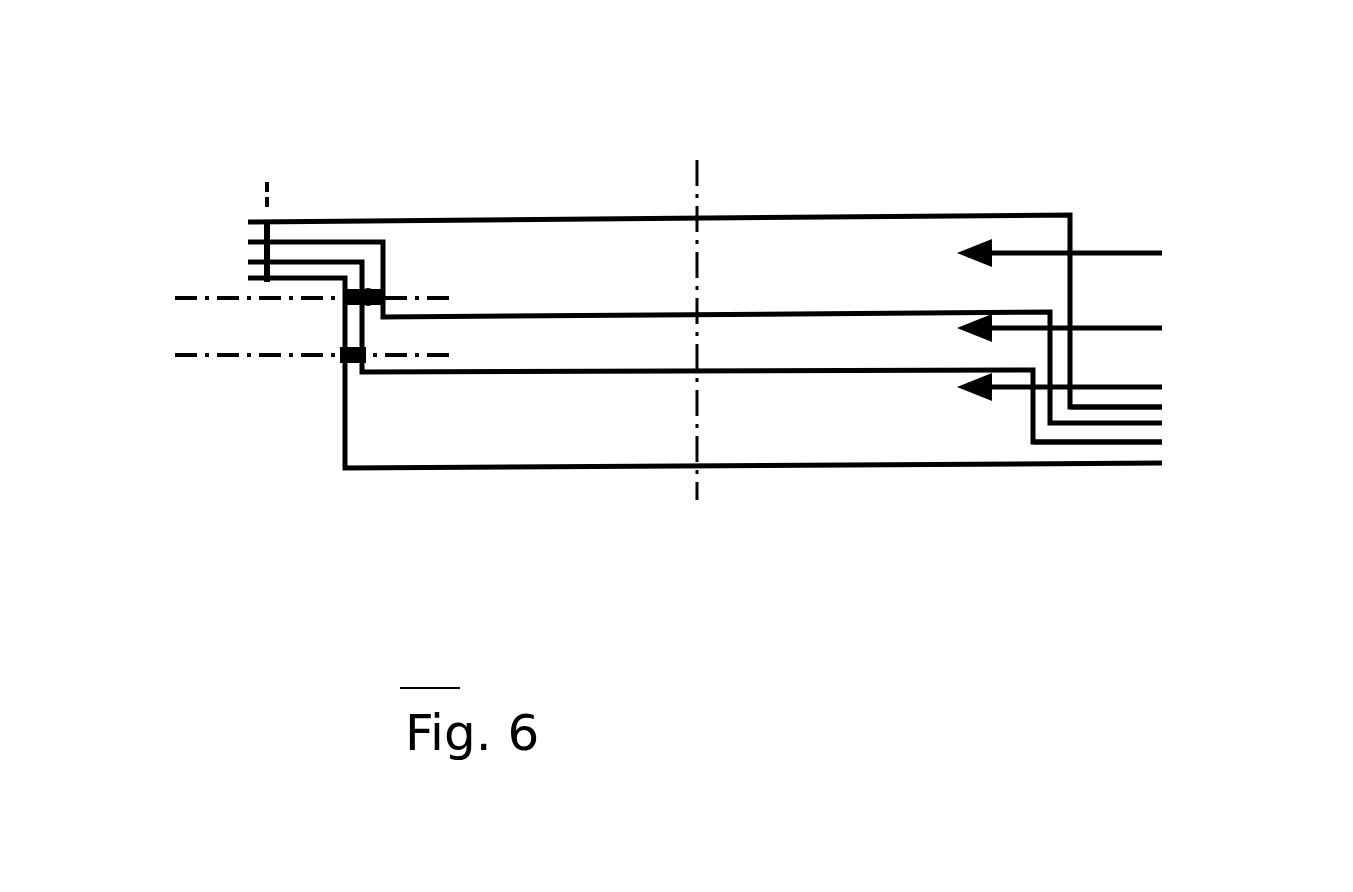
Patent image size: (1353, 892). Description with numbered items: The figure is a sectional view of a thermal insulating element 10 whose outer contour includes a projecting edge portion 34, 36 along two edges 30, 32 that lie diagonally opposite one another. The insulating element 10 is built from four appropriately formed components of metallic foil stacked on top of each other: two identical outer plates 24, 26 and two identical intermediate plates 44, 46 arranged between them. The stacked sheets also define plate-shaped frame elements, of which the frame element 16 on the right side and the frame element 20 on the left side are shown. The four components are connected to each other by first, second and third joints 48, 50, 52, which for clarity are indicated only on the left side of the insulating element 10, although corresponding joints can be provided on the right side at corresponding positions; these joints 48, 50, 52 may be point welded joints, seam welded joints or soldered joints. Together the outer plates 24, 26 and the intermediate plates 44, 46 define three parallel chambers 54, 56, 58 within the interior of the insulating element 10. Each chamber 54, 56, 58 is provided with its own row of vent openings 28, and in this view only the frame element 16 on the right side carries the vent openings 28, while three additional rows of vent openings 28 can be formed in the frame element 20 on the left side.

The insulating element 10 is at (1073, 168).
The frame element 16 is at (1075, 282).
The frame element 20 is at (335, 322).
The outer plate 24 is at (527, 220).
The outer plate 26 is at (752, 470).
The vent openings 28 is at (1075, 245).
The edge 30 is at (1160, 395).
The edge 32 is at (325, 262).
The projecting edge portion 34 is at (1128, 470).
The projecting edge portion 36 is at (290, 222).
The intermediate plate 44 is at (582, 378).
The intermediate plate 46 is at (767, 310).
The first joint 48 is at (338, 360).
The second joint 50 is at (385, 280).
The third joint 52 is at (245, 230).
The chamber 54 is at (822, 437).
The chamber 56 is at (822, 360).
The chamber 58 is at (625, 294).